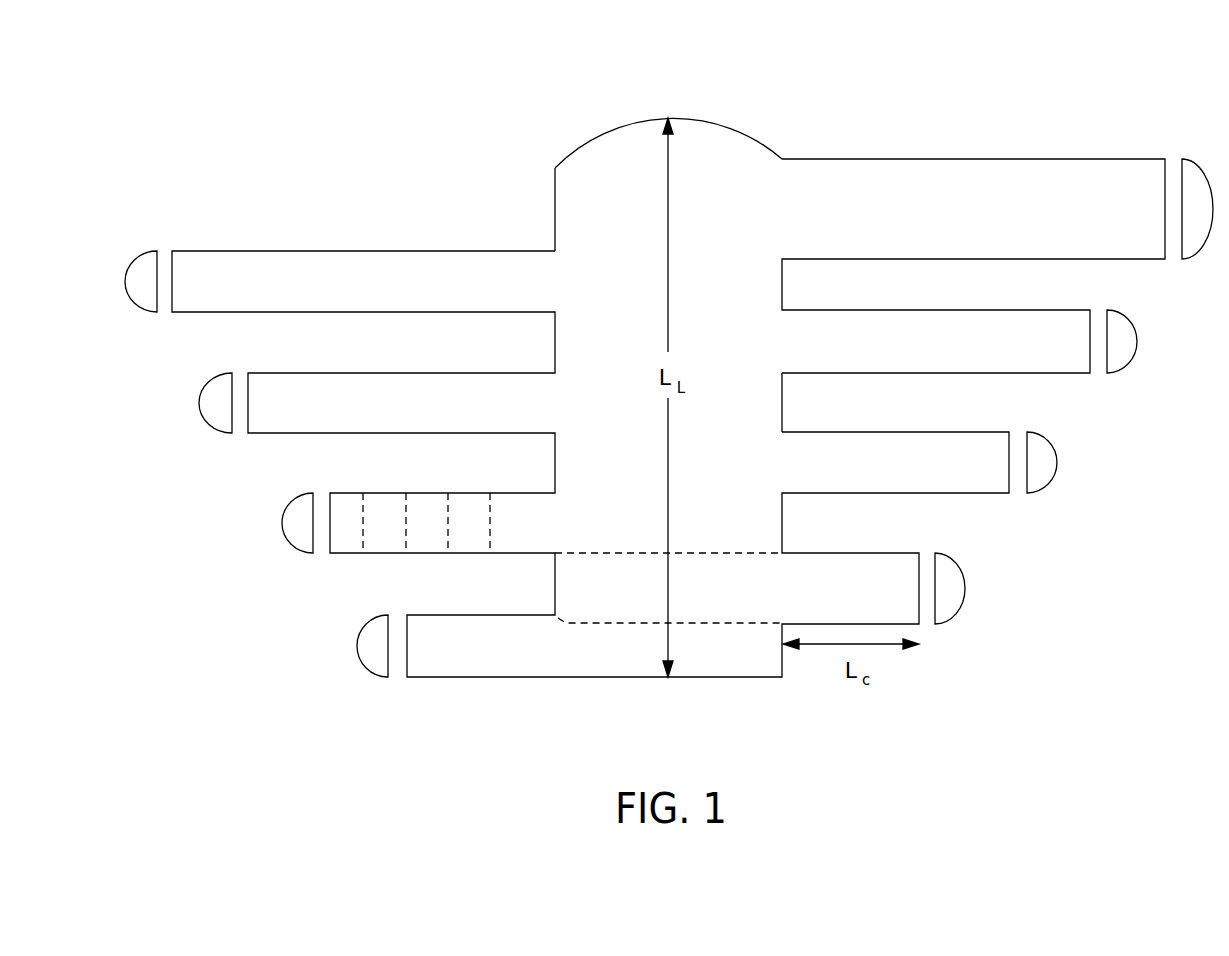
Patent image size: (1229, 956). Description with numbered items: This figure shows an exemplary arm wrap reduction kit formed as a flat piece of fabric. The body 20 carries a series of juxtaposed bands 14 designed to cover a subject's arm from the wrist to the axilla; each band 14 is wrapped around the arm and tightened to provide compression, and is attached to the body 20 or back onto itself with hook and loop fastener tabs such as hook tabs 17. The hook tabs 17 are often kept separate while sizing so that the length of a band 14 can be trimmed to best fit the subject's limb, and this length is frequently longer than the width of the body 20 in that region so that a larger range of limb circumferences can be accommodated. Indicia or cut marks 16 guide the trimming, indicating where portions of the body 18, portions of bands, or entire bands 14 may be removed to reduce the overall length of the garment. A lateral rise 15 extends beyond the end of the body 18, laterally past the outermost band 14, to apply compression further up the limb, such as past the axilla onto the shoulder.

The band 14 is at (853, 602).
The lateral rise 15 is at (720, 122).
The indicia or cut marks 16 is at (363, 555).
The hook tabs 17 is at (1185, 158).
The body 18 is at (573, 170).
The body 20 is at (757, 410).